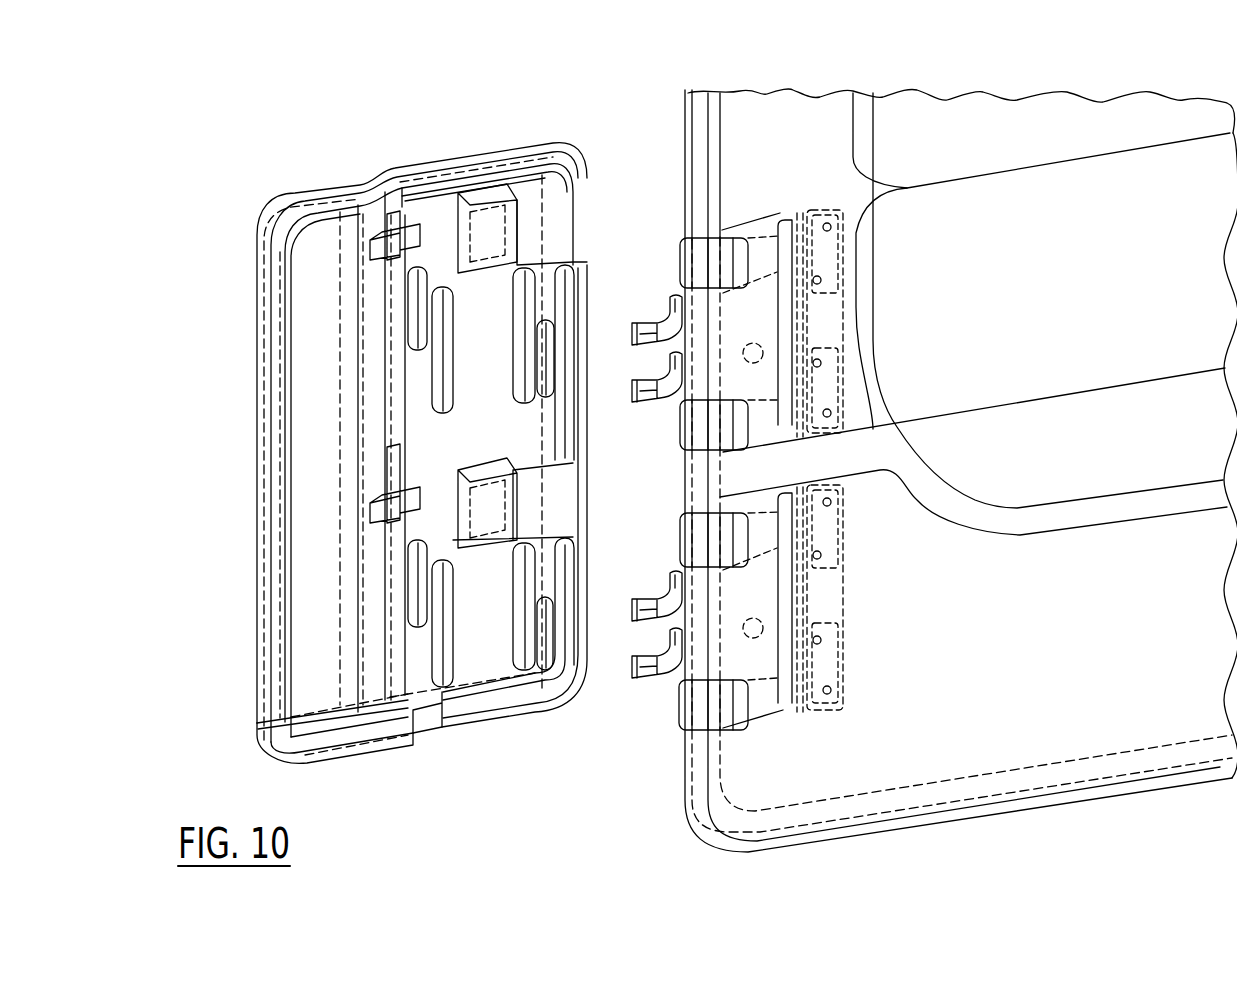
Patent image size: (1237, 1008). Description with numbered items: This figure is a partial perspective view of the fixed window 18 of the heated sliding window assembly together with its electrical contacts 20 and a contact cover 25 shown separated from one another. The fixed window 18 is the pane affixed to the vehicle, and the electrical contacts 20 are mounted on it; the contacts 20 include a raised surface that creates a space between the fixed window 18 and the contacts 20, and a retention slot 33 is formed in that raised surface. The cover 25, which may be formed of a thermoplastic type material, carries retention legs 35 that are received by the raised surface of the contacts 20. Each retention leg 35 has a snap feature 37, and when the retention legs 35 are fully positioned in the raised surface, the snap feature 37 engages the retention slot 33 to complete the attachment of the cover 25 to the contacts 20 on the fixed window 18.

The fixed window 18 is at (763, 93).
The electrical contact 20 is at (684, 300).
The cover 25 is at (257, 512).
The retention slot 33 is at (820, 312).
The retention leg 35 is at (553, 225).
The snap feature 37 is at (487, 203).